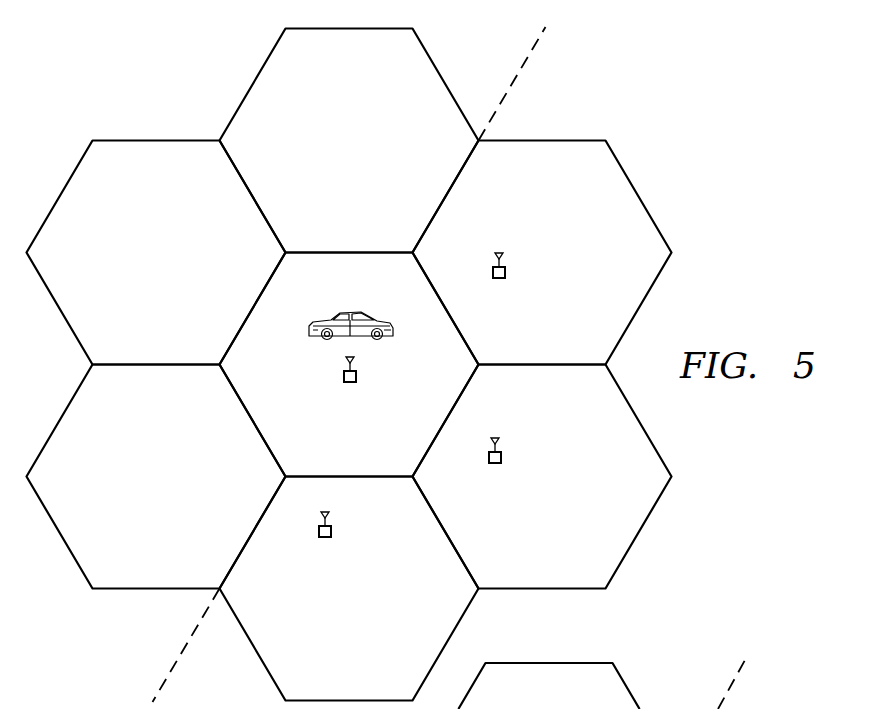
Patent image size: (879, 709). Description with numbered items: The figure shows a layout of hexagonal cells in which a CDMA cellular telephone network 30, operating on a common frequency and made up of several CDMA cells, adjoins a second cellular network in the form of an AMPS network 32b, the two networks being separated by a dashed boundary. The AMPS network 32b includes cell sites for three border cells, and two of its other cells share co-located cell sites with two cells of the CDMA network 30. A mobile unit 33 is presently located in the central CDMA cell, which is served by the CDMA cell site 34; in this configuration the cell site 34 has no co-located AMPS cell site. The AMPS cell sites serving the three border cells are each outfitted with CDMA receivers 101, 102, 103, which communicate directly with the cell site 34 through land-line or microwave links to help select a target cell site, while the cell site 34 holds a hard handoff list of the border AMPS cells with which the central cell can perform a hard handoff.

The CDMA cellular telephone network 30 is at (490, 74).
The AMPS network 32b is at (562, 104).
The mobile unit 33 is at (383, 320).
The CDMA cell site 34 is at (344, 378).
The CDMA receiver 101 is at (506, 272).
The CDMA receiver 102 is at (502, 458).
The CDMA receiver 103 is at (332, 532).